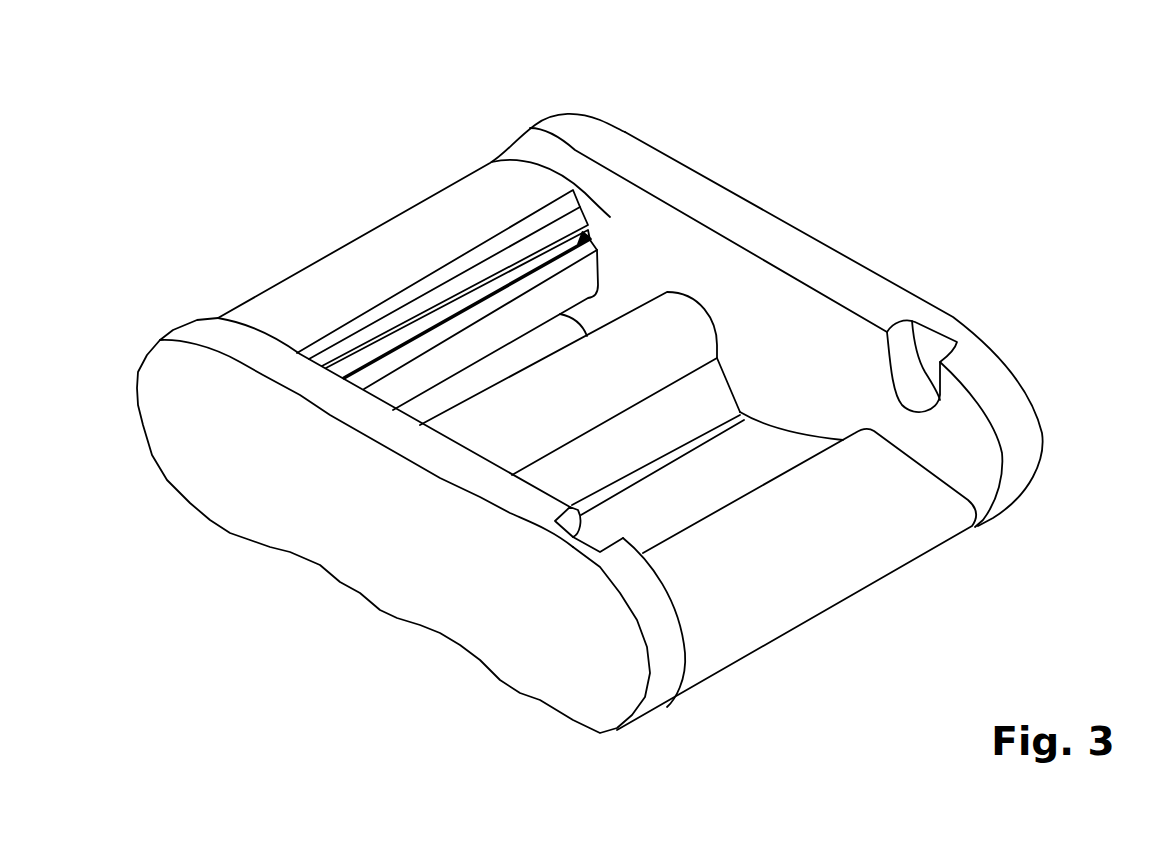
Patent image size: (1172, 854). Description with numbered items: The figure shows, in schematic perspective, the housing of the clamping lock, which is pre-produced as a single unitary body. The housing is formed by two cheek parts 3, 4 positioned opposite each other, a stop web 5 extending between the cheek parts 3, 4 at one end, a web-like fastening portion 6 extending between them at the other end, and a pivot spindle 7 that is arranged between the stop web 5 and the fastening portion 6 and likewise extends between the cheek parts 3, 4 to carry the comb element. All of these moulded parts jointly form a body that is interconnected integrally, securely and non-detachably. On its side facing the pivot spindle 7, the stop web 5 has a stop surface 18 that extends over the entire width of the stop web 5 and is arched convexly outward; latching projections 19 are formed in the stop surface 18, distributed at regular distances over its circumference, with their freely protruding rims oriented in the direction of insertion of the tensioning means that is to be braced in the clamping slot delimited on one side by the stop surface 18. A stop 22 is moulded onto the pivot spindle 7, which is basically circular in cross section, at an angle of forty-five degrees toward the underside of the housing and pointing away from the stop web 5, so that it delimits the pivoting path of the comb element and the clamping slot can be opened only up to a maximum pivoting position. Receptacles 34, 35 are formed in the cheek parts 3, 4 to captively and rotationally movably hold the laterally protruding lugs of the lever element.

The cheek part 3 is at (350, 530).
The cheek part 4 is at (768, 237).
The stop web 5 is at (425, 200).
The fastening portion 6 is at (820, 545).
The pivot spindle 7 is at (685, 330).
The stop surface 18 is at (578, 244).
The latching projections 19 is at (512, 257).
The stop 22 is at (677, 434).
The receptacle 34 is at (560, 518).
The receptacle 35 is at (928, 345).